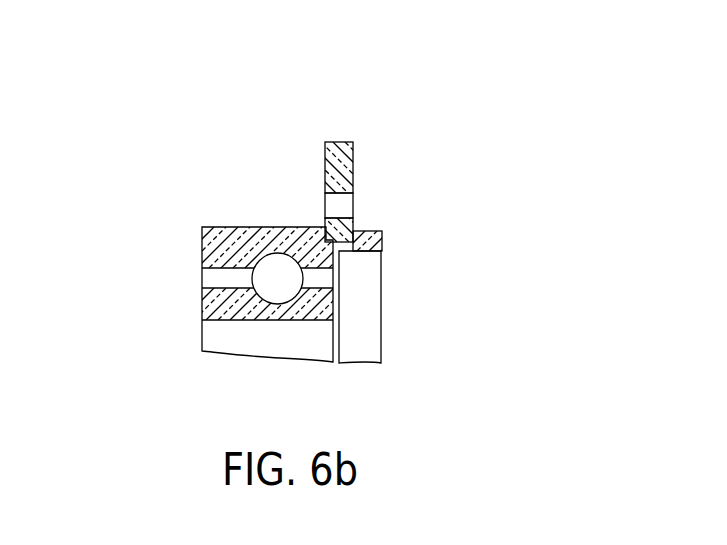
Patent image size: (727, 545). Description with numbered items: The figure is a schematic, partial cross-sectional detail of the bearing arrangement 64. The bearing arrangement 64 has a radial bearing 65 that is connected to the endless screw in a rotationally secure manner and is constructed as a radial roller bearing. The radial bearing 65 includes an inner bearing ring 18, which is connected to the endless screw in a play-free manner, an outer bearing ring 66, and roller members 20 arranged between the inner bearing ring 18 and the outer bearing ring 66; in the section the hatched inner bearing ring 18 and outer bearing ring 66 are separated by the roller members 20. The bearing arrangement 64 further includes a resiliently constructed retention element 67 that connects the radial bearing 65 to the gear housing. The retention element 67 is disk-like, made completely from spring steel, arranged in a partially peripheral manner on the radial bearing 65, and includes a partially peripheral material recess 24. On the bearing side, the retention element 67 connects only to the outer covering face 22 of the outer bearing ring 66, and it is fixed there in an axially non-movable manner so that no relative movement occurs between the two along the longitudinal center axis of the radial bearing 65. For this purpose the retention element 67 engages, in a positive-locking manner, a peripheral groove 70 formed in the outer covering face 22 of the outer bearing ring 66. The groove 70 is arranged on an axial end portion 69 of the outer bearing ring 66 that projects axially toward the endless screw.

The inner bearing ring 18 is at (230, 302).
The roller members 20 is at (258, 280).
The outer covering face 22 is at (278, 227).
The partially peripheral material recess 24 is at (345, 203).
The bearing arrangement 64 is at (351, 140).
The radial bearing 65 is at (244, 239).
The outer bearing ring 66 is at (244, 239).
The retention element 67 is at (355, 152).
The axial end portion 69 is at (373, 242).
The peripheral groove 70 is at (334, 251).